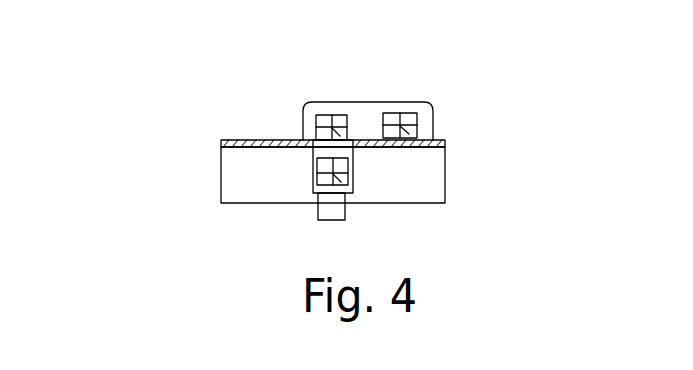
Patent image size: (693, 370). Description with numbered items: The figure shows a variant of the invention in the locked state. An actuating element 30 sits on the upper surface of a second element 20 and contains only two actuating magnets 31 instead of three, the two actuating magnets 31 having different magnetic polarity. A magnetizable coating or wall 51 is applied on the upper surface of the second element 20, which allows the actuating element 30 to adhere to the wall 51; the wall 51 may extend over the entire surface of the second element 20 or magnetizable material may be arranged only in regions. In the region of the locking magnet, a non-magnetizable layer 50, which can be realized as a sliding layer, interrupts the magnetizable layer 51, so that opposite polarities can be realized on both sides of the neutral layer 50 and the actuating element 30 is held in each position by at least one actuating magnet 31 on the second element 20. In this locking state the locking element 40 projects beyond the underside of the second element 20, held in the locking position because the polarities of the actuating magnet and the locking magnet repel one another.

The second element 20 is at (406, 170).
The actuating element 30 is at (413, 86).
The actuating magnet 31 is at (319, 113).
The locking element 40 is at (490, 229).
The non-magnetizable layer 50 is at (316, 148).
The magnetizable wall 51 is at (237, 114).